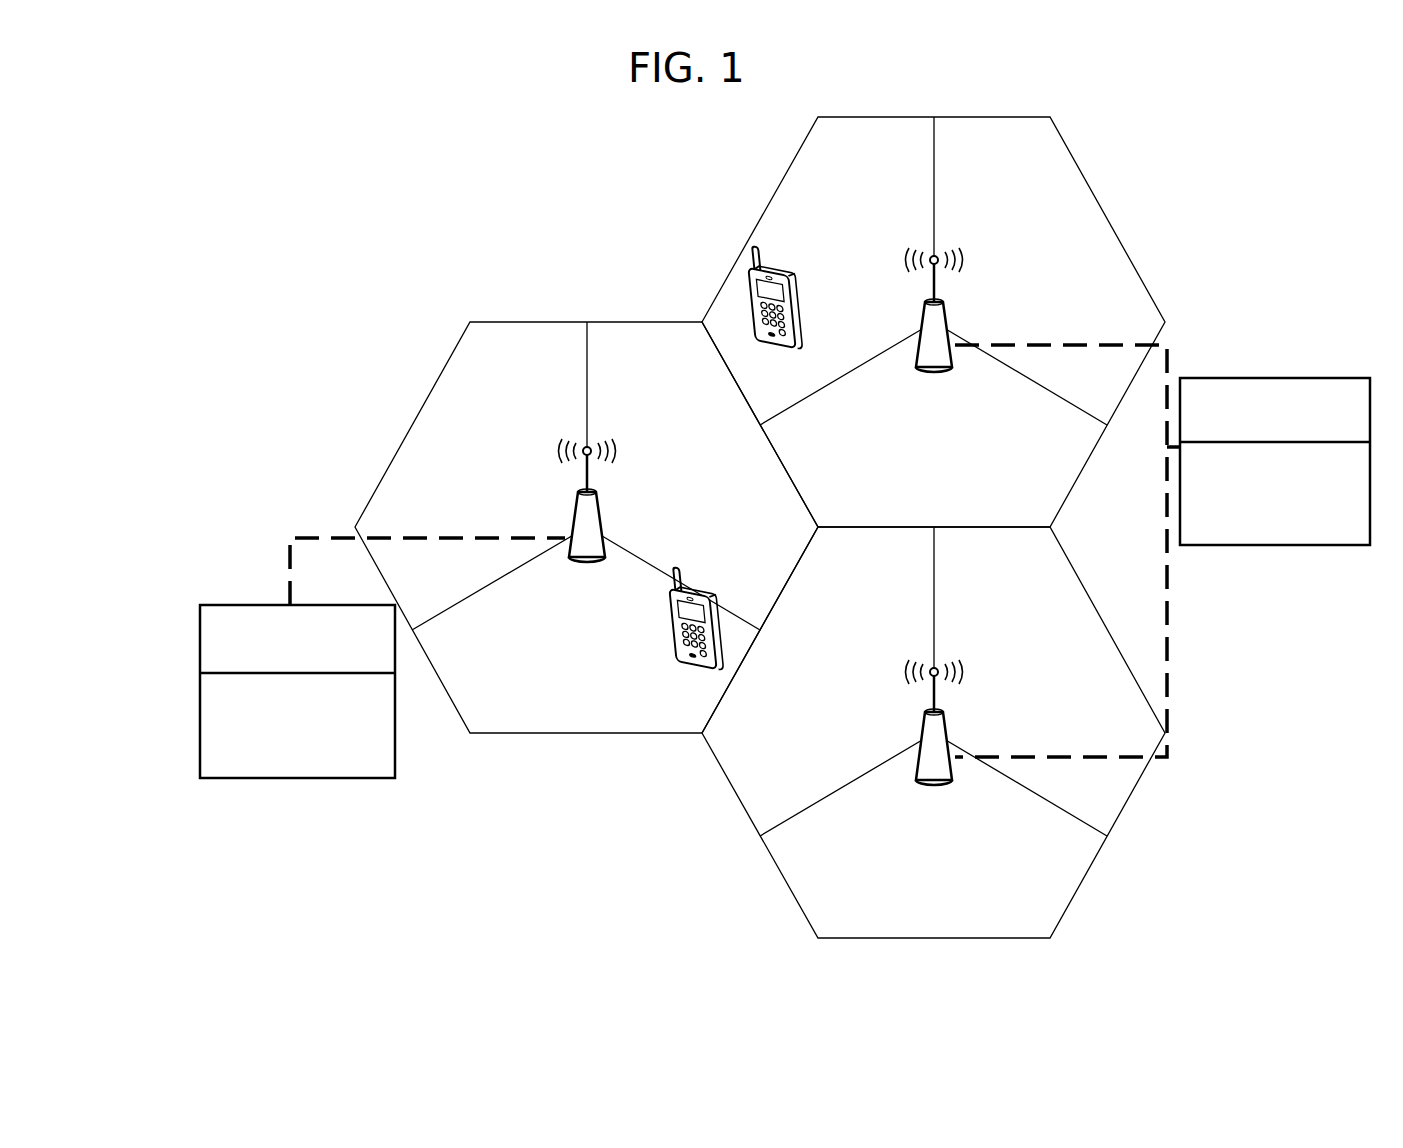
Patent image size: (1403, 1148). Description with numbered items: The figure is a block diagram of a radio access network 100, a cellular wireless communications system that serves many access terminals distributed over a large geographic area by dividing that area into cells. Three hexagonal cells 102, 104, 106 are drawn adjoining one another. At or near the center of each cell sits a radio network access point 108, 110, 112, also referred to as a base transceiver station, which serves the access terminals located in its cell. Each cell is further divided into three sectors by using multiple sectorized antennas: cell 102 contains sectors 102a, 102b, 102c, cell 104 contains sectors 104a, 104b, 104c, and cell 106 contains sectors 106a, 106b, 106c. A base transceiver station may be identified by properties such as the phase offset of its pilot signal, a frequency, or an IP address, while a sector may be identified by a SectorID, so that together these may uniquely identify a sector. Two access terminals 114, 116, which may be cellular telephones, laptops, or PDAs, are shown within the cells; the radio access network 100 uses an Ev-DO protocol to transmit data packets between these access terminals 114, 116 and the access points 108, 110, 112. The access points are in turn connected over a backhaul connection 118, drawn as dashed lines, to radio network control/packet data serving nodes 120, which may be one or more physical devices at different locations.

The radio access network 100 is at (517, 203).
The cell 102 is at (564, 527).
The sector 102a is at (519, 402).
The sector 102b is at (673, 545).
The sector 102c is at (513, 615).
The cell 104 is at (944, 322).
The sector 104a is at (878, 190).
The sector 104b is at (1020, 340).
The sector 104c is at (866, 391).
The cell 106 is at (885, 732).
The sector 106a is at (876, 599).
The sector 106b is at (1020, 752).
The sector 106c is at (862, 814).
The radio network access point 108 is at (578, 556).
The radio network access point 110 is at (916, 364).
The radio network access point 112 is at (922, 778).
The access terminal 114 is at (798, 347).
The access terminal 116 is at (671, 662).
The backhaul connection 118 is at (290, 560).
The radio network control/packet data serving node 120 is at (785, 578).